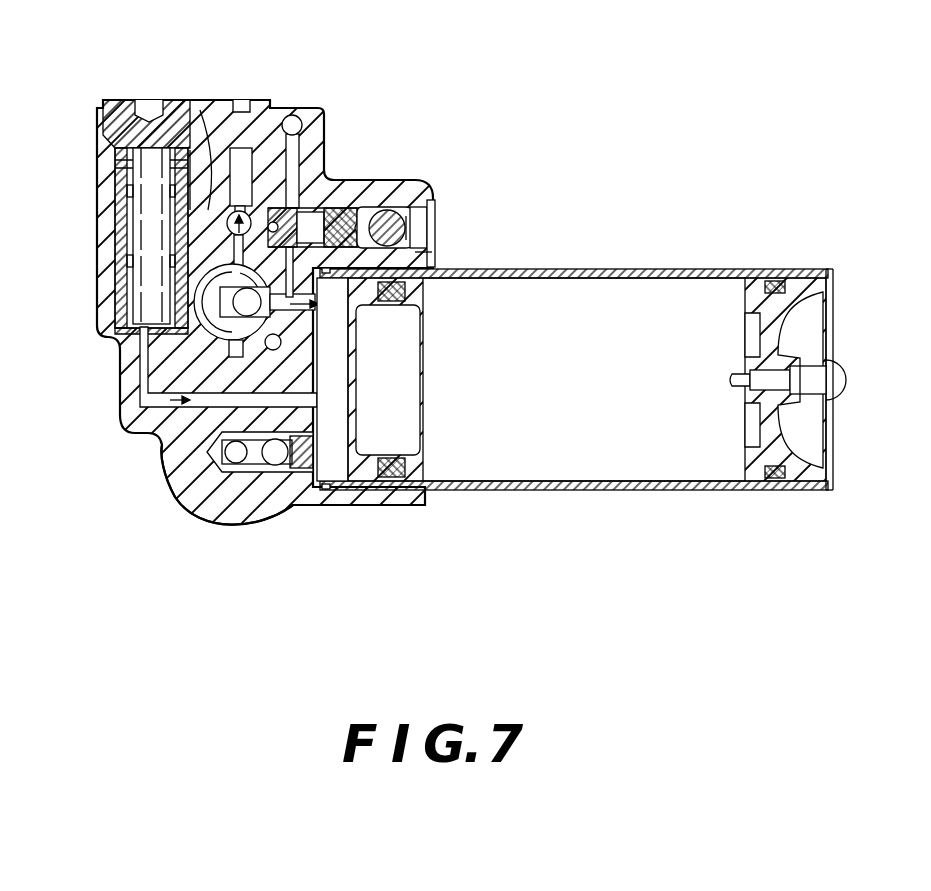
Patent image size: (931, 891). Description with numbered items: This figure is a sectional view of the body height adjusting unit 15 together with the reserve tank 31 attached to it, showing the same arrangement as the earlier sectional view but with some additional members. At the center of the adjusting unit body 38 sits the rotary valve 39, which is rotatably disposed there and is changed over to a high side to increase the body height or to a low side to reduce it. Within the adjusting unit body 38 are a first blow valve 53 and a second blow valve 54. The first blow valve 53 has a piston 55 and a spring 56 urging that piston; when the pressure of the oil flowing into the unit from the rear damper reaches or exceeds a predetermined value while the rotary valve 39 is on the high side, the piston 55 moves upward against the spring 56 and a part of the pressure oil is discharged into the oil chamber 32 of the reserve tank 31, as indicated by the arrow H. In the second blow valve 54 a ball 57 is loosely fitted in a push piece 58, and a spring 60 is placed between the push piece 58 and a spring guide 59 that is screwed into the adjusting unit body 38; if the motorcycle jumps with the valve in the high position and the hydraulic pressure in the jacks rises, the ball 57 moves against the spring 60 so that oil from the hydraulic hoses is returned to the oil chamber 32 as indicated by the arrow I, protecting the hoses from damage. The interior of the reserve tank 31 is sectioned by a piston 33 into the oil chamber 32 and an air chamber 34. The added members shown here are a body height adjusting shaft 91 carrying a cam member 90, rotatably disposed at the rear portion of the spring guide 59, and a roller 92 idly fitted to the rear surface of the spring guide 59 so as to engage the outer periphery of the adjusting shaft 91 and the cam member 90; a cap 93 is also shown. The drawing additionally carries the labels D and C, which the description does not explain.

The body height adjusting unit 15 is at (105, 72).
The first blow valve 53 is at (120, 157).
The piston 55 is at (118, 212).
The spring 56 is at (118, 243).
The discharge valve D is at (219, 134).
The ball 57 is at (270, 220).
The push piece 58 is at (330, 208).
The spring 60 is at (357, 210).
The spring guide 59 is at (383, 188).
The second blow valve 54 is at (427, 210).
The roller 92 is at (436, 222).
The body height adjusting shaft 91 is at (436, 232).
The cam member 90 is at (418, 241).
The cap 93 is at (436, 252).
The reserve tank 31 is at (697, 270).
The rotary valve 39 is at (330, 330).
The arrow I is at (317, 303).
The passage C is at (232, 357).
The arrow H is at (128, 420).
The adjusting unit body 38 is at (205, 502).
The oil chamber 32 is at (332, 490).
The piston 33 is at (392, 490).
The air chamber 34 is at (591, 458).